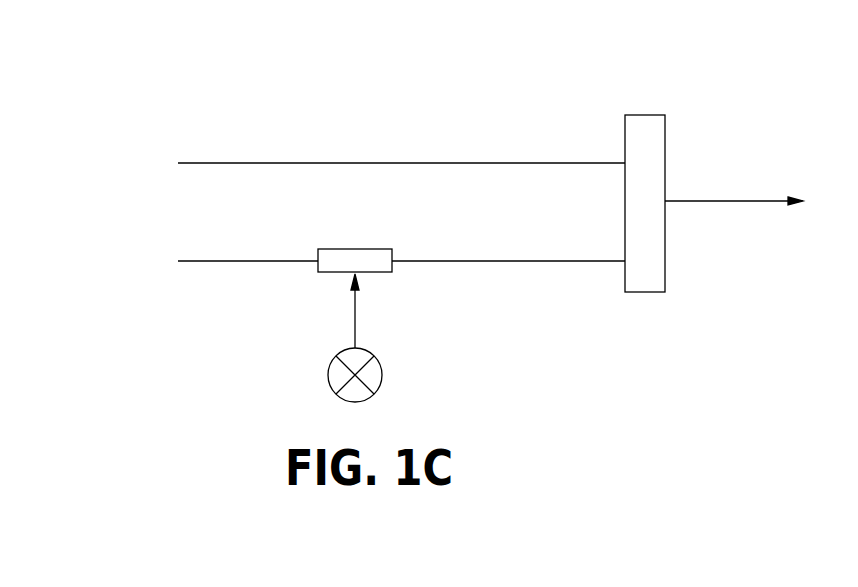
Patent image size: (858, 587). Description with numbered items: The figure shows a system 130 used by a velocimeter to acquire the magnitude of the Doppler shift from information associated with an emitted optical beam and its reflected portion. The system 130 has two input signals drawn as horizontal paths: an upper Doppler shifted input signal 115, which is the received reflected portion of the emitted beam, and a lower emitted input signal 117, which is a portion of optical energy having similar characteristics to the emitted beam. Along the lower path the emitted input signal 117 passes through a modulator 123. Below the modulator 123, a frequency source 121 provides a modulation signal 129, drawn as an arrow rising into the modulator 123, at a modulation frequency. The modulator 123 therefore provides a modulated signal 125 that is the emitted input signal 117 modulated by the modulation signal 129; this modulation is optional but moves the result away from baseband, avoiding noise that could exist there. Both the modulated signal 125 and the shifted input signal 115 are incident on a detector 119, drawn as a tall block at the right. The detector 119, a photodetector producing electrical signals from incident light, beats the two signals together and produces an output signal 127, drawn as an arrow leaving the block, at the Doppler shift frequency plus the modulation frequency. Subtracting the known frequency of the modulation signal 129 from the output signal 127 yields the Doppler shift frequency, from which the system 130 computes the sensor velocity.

The system 130 is at (225, 100).
The Doppler shifted input signal 115 is at (432, 161).
The emitted input signal 117 is at (266, 259).
The detector 119 is at (648, 114).
The frequency source 121 is at (383, 378).
The modulator 123 is at (352, 248).
The modulated signal 125 is at (500, 259).
The output signal 127 is at (753, 199).
The modulation signal 129 is at (357, 326).